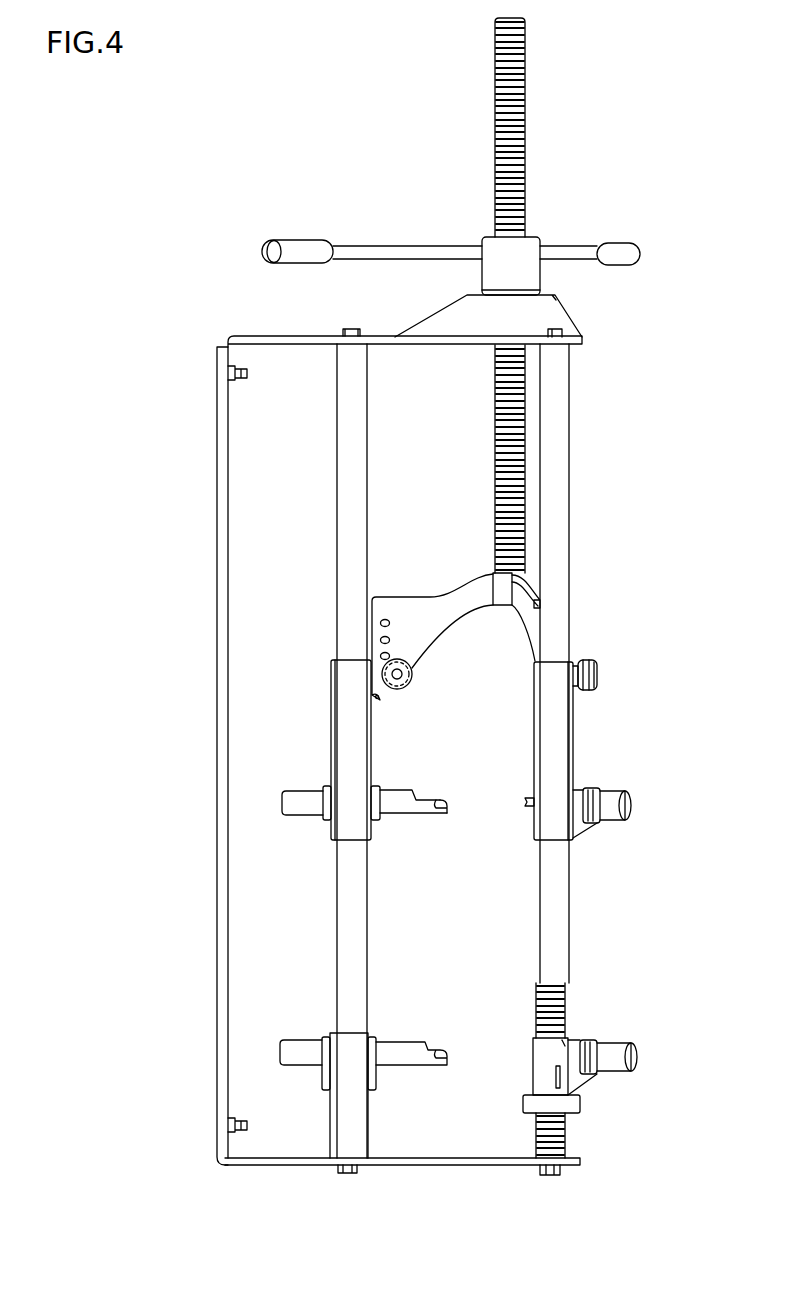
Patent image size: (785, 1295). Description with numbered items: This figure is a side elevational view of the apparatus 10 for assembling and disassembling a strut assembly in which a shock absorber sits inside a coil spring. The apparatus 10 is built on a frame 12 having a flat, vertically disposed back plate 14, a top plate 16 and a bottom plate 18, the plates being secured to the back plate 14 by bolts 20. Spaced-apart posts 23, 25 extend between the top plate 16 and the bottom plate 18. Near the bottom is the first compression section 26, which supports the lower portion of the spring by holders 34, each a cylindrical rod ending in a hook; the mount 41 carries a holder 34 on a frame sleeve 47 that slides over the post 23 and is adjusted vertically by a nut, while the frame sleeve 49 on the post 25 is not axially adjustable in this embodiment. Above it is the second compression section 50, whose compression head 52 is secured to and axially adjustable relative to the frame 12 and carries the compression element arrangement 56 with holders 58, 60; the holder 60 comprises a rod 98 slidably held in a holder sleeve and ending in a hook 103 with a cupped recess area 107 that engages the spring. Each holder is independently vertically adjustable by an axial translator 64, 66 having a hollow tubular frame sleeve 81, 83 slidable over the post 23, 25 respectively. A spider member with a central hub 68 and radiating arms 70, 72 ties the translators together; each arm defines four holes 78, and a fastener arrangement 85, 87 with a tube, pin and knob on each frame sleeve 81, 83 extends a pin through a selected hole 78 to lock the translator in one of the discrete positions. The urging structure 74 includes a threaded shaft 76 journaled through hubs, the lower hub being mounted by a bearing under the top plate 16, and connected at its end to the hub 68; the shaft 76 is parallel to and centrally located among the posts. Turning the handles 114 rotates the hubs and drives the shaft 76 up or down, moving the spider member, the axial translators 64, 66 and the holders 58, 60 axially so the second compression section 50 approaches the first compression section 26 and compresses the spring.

The apparatus 10 is at (640, 86).
The frame 12 is at (176, 394).
The back plate 14 is at (216, 687).
The top plate 16 is at (275, 337).
The bottom plate 18 is at (398, 1166).
The bolts 20 is at (235, 381).
The post 23 is at (564, 501).
The post 25 is at (343, 452).
The first compression section 26 is at (612, 991).
The holders 34 is at (397, 1091).
The mount 41 is at (533, 1057).
The frame sleeve 47 is at (533, 1076).
The frame sleeve 49 is at (332, 1118).
The second compression section 50 is at (658, 593).
The compression head 52 is at (660, 659).
The compression element arrangement 56 is at (656, 752).
The holder 58 is at (609, 853).
The holder 60 is at (392, 761).
The axial translator 64 is at (538, 718).
The axial translator 66 is at (331, 712).
The central hub 68 is at (497, 606).
The arm 70 is at (530, 641).
The arm 72 is at (417, 597).
The urging structure 74 is at (601, 192).
The threaded shaft 76 is at (497, 148).
The holes 78 is at (385, 619).
The frame sleeve 81 is at (568, 759).
The frame sleeve 83 is at (331, 680).
The fastener arrangement 85 is at (590, 659).
The fastener arrangement 87 is at (406, 686).
The rod 98 is at (292, 812).
The hook 103 is at (418, 816).
The cupped recess area 107 is at (440, 812).
The handles 114 is at (378, 245).